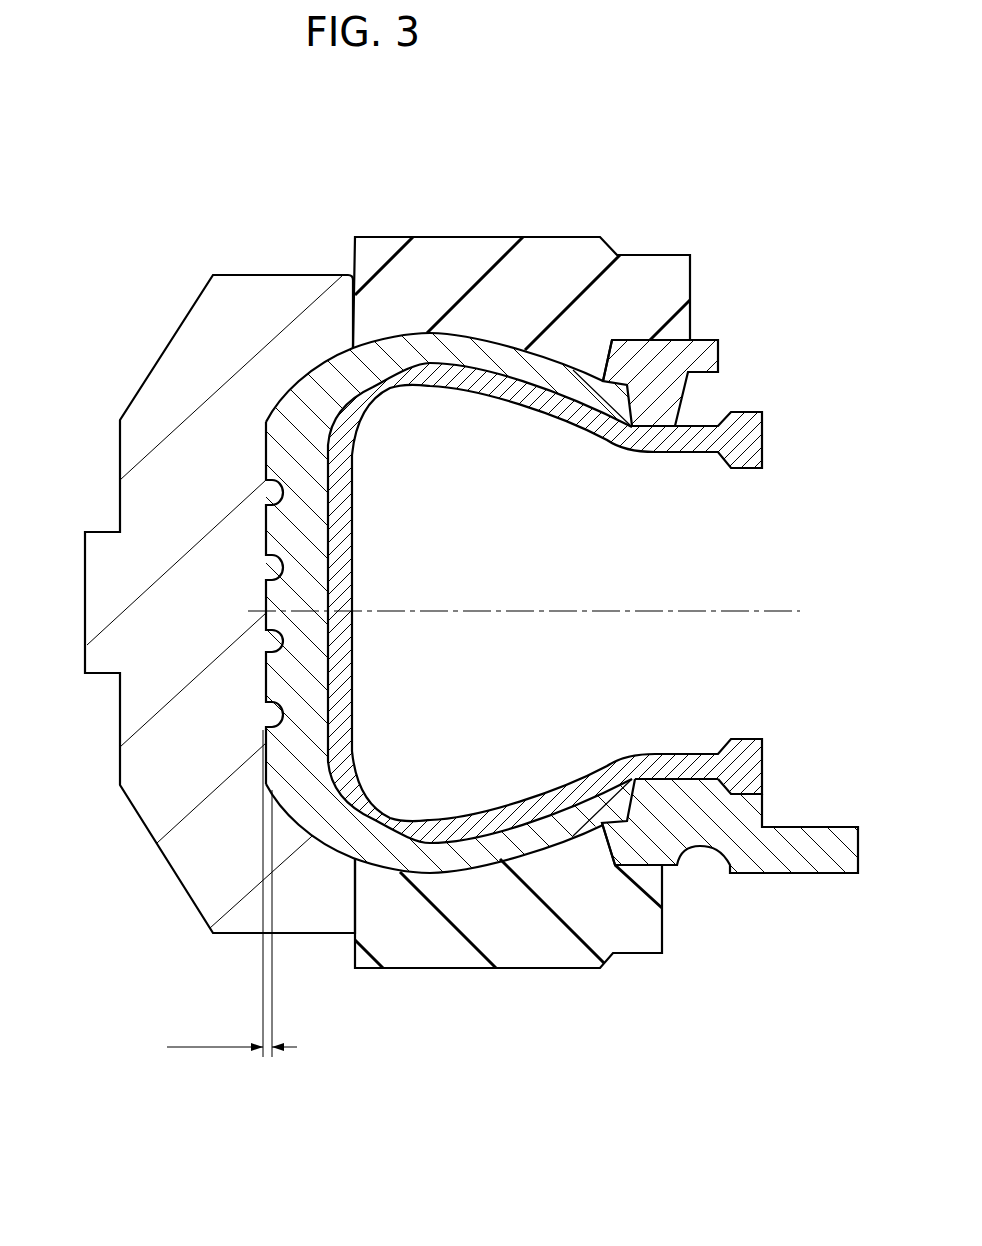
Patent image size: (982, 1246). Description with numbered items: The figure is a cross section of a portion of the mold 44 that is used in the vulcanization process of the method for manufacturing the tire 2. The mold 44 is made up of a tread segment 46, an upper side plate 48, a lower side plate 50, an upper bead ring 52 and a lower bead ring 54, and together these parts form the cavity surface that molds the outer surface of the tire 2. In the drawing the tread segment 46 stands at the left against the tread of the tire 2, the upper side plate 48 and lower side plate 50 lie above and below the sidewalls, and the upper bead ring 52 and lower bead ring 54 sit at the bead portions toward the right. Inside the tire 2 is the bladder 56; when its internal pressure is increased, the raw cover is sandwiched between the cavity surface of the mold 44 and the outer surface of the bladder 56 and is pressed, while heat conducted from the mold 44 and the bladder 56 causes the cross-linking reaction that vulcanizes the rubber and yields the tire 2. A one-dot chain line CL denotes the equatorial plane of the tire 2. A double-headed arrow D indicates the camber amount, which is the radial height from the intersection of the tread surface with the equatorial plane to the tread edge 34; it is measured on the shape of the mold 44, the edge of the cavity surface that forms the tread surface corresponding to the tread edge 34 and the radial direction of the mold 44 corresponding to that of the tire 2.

The tire 2 is at (340, 838).
The tread edge 34 is at (270, 422).
The mold 44 is at (230, 274).
The tread segment 46 is at (286, 293).
The upper side plate 48 is at (558, 250).
The lower side plate 50 is at (560, 962).
The upper bead ring 52 is at (655, 346).
The lower bead ring 54 is at (769, 860).
The bladder 56 is at (510, 822).
The equatorial plane CL is at (682, 612).
The camber amount D is at (232, 893).